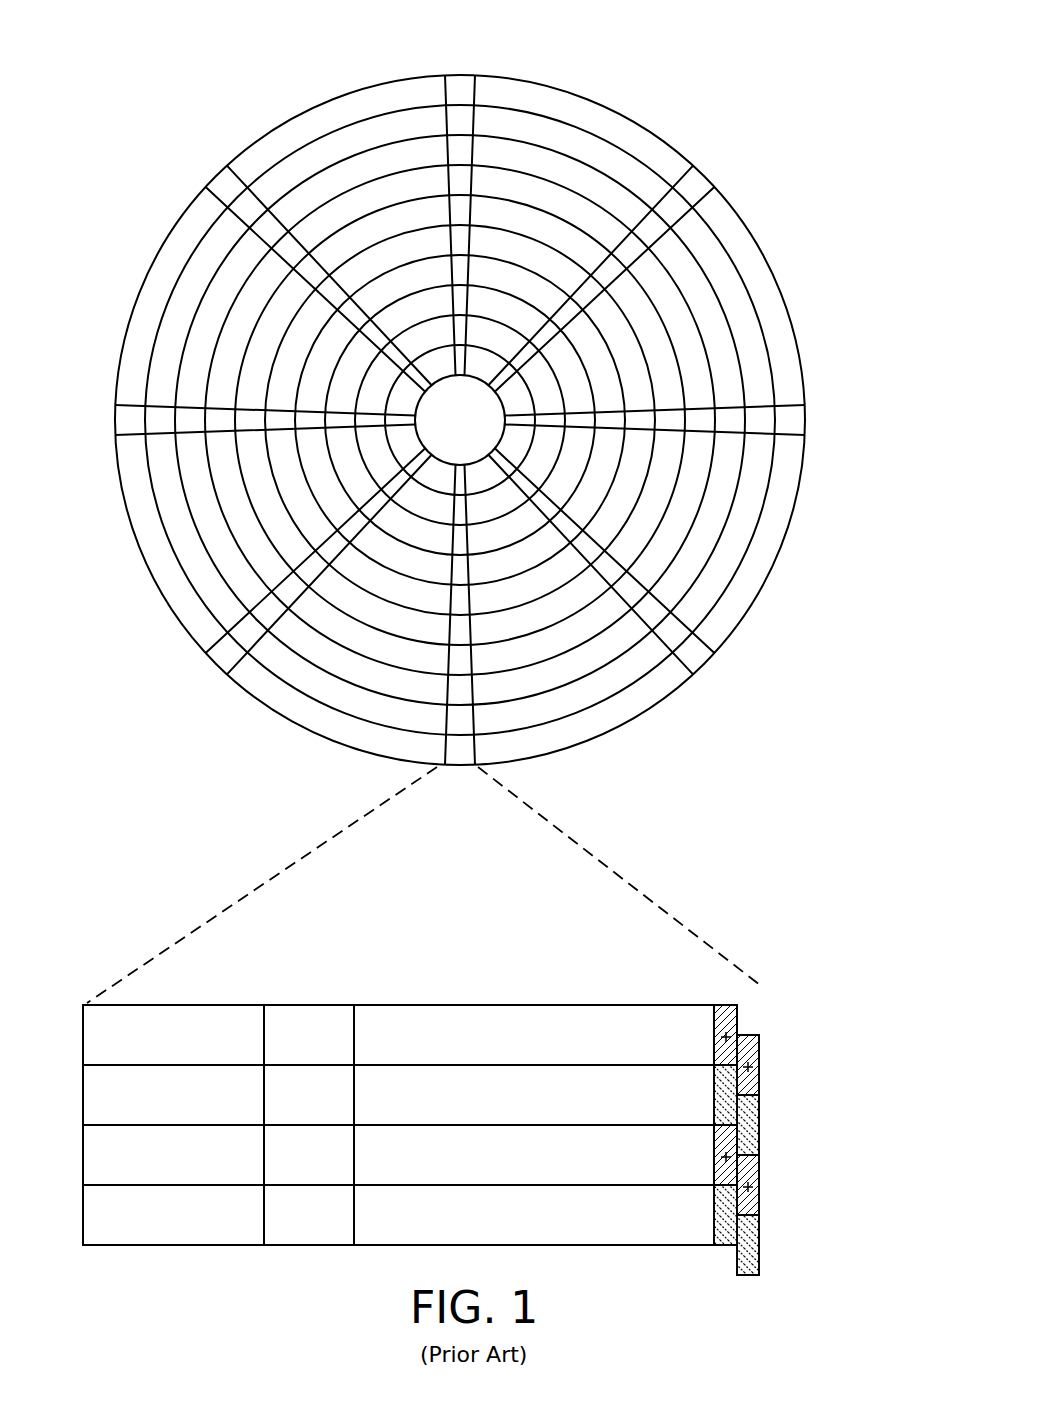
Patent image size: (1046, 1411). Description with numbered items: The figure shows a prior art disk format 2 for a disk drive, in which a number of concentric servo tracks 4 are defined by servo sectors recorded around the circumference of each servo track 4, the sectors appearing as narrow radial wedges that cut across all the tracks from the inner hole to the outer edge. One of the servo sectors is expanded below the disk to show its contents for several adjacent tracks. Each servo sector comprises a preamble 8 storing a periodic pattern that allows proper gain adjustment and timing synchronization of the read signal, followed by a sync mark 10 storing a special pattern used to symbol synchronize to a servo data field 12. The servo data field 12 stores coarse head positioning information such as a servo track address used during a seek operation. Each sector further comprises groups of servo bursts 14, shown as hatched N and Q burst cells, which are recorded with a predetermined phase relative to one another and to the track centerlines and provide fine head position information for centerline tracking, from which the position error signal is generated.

The disk format 2 is at (207, 81).
The servo track 4 is at (600, 127).
The preamble 8 is at (183, 1004).
The sync mark 10 is at (313, 1004).
The servo data field 12 is at (521, 1004).
The servo bursts 14 is at (758, 1002).